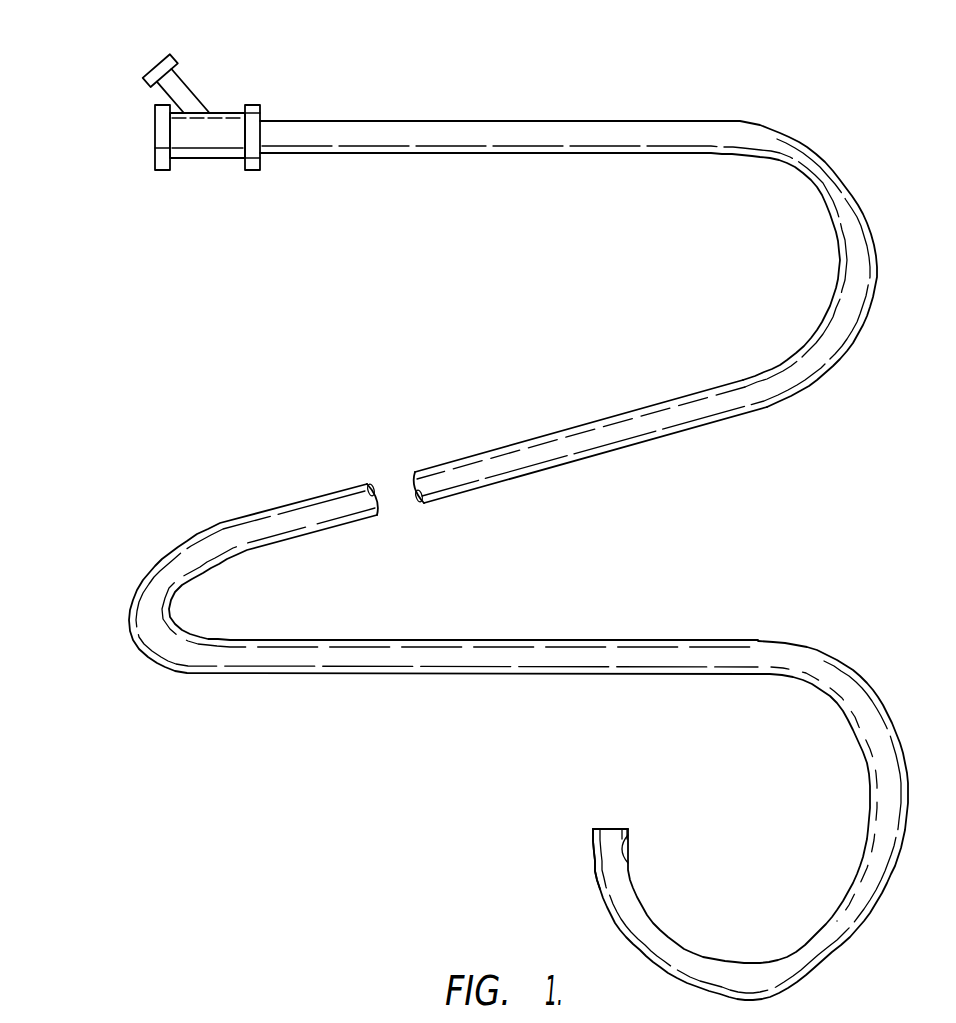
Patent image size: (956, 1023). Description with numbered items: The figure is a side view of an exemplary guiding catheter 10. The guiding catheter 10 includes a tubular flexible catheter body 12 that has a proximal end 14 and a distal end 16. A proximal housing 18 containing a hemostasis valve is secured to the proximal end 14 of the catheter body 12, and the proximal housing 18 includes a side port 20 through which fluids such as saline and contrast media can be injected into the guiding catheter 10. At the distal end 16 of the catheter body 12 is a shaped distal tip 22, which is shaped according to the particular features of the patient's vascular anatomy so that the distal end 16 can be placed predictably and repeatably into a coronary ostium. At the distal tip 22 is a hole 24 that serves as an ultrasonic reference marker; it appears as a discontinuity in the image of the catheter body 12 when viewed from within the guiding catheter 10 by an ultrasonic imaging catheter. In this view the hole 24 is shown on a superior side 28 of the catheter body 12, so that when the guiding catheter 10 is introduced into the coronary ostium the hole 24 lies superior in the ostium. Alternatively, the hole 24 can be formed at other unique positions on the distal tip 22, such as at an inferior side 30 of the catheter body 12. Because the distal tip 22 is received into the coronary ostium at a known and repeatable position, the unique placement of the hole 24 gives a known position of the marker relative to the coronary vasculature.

The guiding catheter 10 is at (702, 524).
The catheter body 12 is at (541, 433).
The proximal end 14 is at (338, 121).
The distal end 16 is at (601, 827).
The proximal housing 18 is at (193, 160).
The side port 20 is at (163, 64).
The distal tip 22 is at (706, 952).
The hole 24 is at (630, 852).
The superior side 28 is at (630, 831).
The inferior side 30 is at (597, 880).